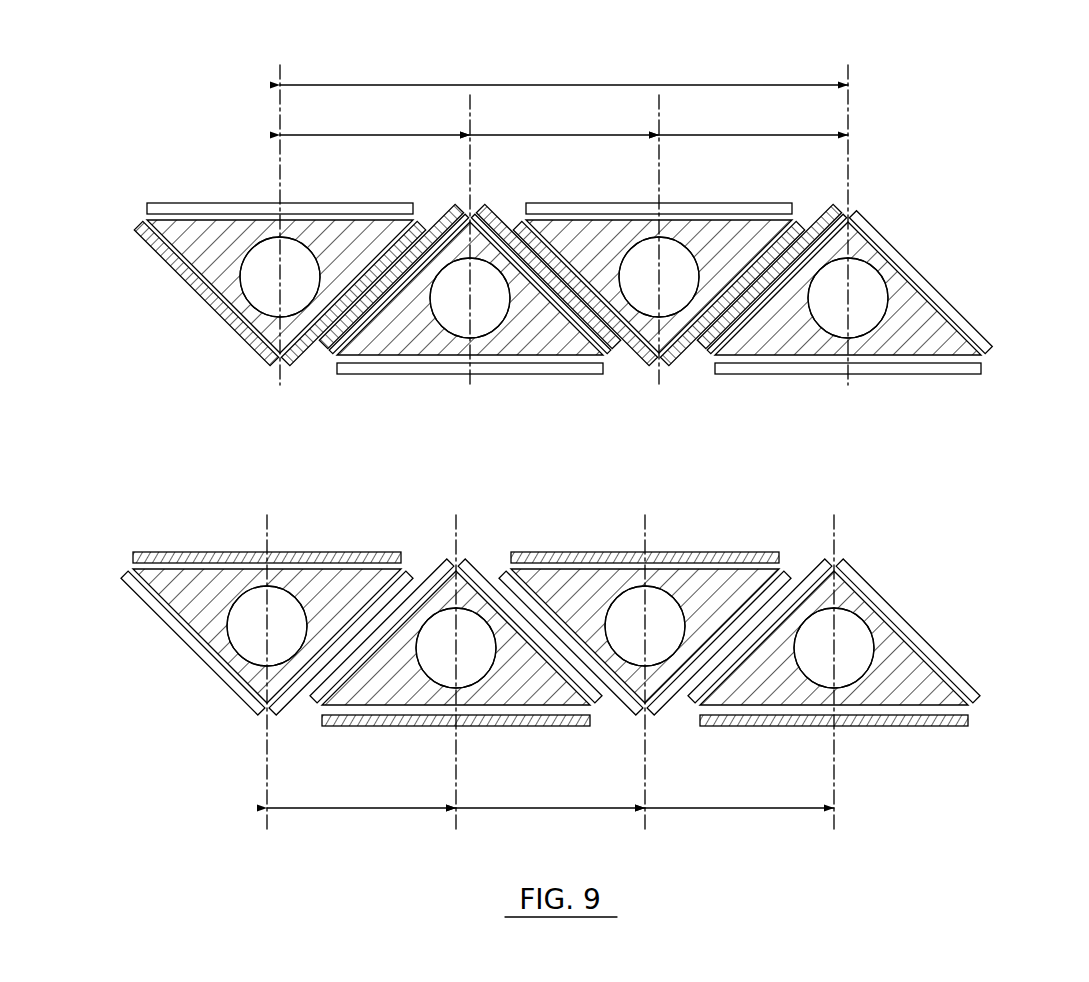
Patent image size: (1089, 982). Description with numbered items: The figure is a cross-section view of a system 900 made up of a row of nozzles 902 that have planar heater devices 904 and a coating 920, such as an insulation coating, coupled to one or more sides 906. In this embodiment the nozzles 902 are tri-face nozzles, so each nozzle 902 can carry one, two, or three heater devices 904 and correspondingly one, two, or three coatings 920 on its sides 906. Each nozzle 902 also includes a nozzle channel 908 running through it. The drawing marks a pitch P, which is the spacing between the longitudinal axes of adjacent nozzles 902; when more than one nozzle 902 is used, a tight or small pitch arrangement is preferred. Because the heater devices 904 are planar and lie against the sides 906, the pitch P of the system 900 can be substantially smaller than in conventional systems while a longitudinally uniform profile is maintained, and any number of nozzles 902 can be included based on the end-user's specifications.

The system 900 is at (912, 106).
The nozzle 902 is at (195, 238).
The heater device 904 is at (352, 203).
The side 906 is at (975, 320).
The nozzle channel 908 is at (250, 270).
The coating 920 is at (458, 215).